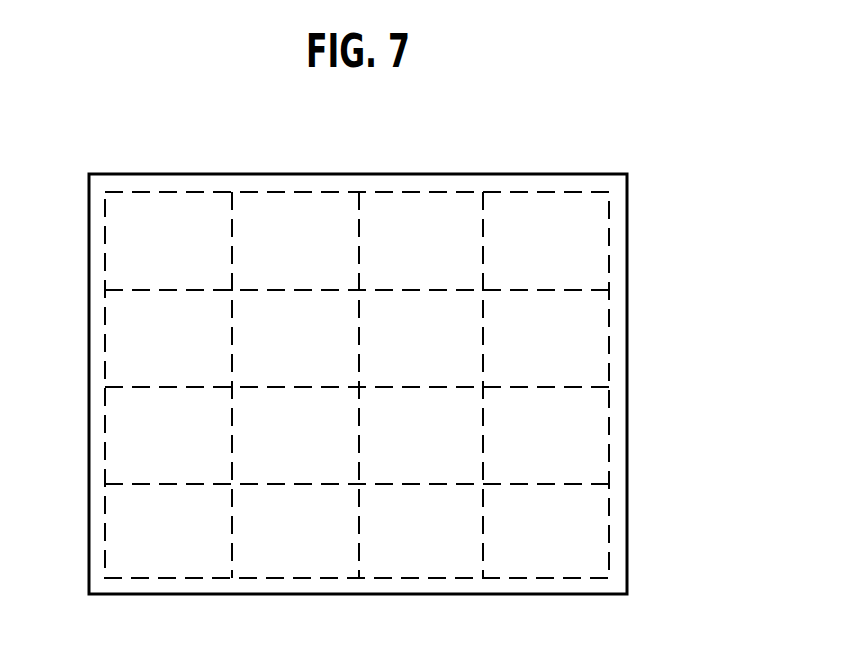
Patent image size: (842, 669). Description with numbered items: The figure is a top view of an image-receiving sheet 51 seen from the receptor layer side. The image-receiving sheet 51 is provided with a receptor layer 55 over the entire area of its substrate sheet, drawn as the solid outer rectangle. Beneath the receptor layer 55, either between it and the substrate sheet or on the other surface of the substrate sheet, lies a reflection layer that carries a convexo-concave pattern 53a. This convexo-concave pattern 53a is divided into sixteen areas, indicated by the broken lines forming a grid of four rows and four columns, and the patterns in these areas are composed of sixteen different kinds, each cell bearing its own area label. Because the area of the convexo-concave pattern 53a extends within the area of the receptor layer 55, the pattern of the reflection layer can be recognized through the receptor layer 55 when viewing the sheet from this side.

The convexo-concave pattern 53a is at (176, 186).
The image-receiving sheet 51 is at (537, 160).
The receptor layer 55 is at (623, 265).